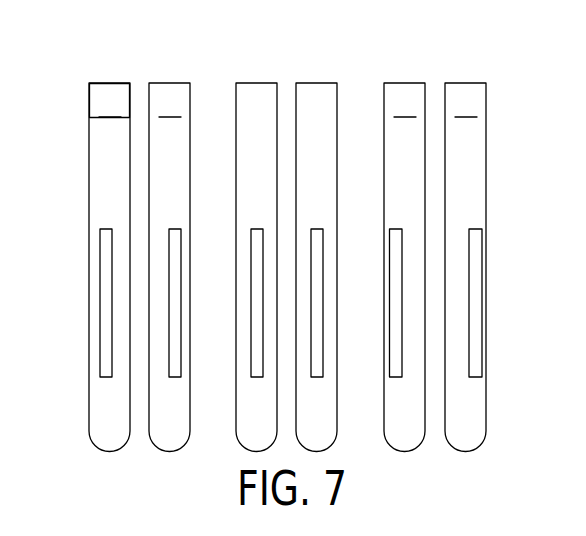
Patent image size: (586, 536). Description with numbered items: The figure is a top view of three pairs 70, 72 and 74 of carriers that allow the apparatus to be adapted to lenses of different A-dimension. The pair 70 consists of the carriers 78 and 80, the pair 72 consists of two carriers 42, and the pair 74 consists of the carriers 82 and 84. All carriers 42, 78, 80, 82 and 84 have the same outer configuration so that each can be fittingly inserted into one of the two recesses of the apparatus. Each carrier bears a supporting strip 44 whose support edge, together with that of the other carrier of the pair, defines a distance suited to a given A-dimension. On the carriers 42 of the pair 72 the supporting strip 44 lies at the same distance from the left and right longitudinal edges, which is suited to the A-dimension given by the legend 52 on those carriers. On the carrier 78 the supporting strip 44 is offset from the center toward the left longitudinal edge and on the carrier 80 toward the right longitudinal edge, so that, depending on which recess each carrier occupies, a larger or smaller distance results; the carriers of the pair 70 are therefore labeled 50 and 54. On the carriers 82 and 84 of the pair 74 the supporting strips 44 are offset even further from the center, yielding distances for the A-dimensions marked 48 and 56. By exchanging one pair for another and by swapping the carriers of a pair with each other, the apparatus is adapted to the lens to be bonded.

The carrier 42 is at (257, 429).
The supporting strip 44 is at (105, 269).
The second material 48 is at (435, 131).
The first material 50 is at (140, 131).
The third material 52 is at (338, 71).
The first coating 54 is at (135, 101).
The second coating 56 is at (430, 101).
The pair of carriers 70 is at (135, 242).
The pair of carriers 72 is at (286, 242).
The pair of carriers 74 is at (438, 242).
The carrier 78 is at (105, 175).
The carrier 80 is at (163, 175).
The carrier 82 is at (410, 175).
The carrier 84 is at (468, 175).